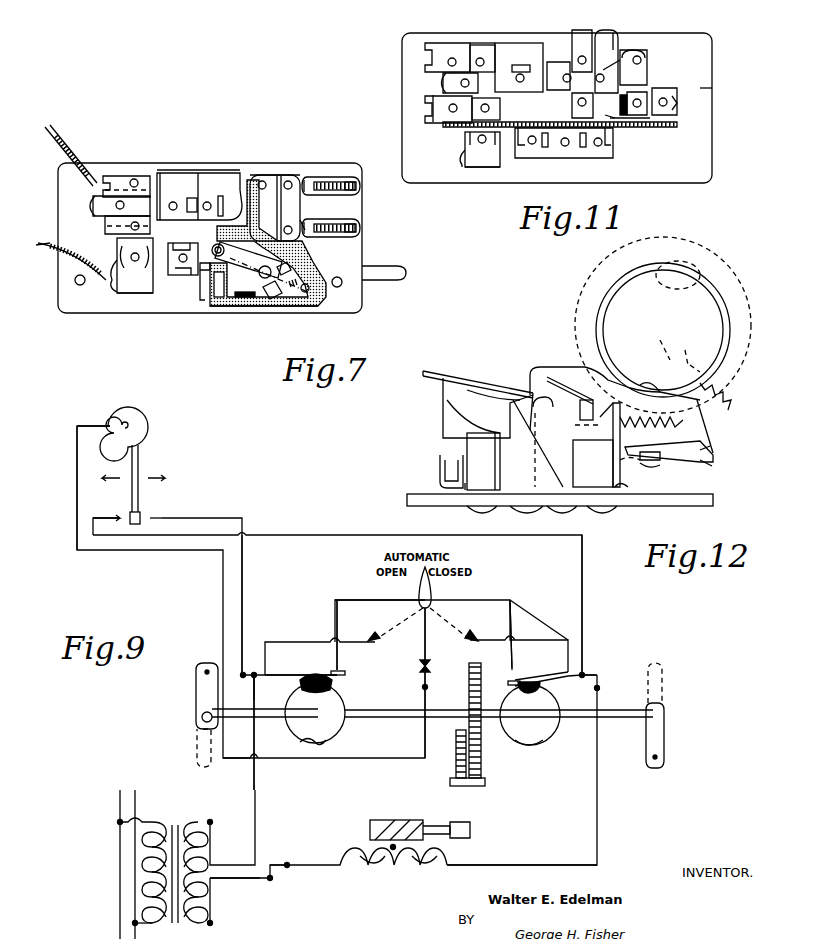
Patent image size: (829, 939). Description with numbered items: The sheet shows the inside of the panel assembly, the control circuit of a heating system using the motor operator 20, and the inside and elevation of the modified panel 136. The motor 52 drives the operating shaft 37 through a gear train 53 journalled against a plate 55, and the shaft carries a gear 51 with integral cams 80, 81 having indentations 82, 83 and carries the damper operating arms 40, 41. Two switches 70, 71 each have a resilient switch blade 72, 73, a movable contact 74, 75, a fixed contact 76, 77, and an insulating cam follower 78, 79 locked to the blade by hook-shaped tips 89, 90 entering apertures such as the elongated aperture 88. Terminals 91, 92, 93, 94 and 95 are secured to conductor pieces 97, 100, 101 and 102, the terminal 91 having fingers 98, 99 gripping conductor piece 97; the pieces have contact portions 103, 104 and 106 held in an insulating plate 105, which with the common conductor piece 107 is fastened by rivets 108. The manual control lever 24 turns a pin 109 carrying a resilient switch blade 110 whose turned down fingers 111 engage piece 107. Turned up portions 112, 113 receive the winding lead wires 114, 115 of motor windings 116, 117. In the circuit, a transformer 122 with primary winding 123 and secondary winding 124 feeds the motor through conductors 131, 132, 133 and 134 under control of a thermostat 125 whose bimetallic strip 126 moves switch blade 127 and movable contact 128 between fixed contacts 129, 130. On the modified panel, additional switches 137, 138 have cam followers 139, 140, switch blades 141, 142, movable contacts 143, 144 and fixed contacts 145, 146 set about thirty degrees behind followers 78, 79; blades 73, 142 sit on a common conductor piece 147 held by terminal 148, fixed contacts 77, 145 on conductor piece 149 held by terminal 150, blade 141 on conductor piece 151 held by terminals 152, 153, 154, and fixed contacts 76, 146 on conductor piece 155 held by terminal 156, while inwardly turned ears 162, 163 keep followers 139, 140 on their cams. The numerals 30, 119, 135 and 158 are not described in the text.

In FIG. 9, the motor operator 20 is at (536, 616).
In FIG. 7, the manual control lever 24 is at (392, 266).
In FIG. 9, the manual control lever 24 is at (432, 590).
In FIG. 12, the dial mechanism 30 is at (690, 366).
In FIG. 9, the operating shaft 37 is at (612, 718).
In FIG. 9, the operating arm 40 is at (658, 738).
In FIG. 9, the operating arm 41 is at (205, 693).
In FIG. 12, the gear 51 is at (732, 396).
In FIG. 9, the motor 52 is at (350, 831).
In FIG. 9, the gear train 53 is at (487, 795).
In FIG. 9, the plate 55 is at (482, 750).
In FIG. 7, the switch 70 is at (325, 250).
In FIG. 11, the switch 70 is at (648, 120).
In FIG. 12, the switch 70 is at (618, 457).
In FIG. 9, the switch 70 is at (526, 668).
In FIG. 7, the switch 71 is at (336, 169).
In FIG. 11, the switch 71 is at (661, 62).
In FIG. 9, the switch 71 is at (320, 665).
In FIG. 7, the resilient switch blade 72 is at (112, 228).
In FIG. 11, the resilient switch blade 72 is at (470, 130).
In FIG. 12, the resilient switch blade 72 is at (703, 442).
In FIG. 9, the resilient switch blade 72 is at (555, 682).
In FIG. 7, the resilient switch blade 73 is at (127, 176).
In FIG. 11, the resilient switch blade 73 is at (483, 44).
In FIG. 9, the resilient switch blade 73 is at (277, 674).
In FIG. 12, the movable contact 74 is at (662, 458).
In FIG. 9, the movable contact 74 is at (508, 682).
In FIG. 9, the movable contact 75 is at (344, 675).
In FIG. 7, the fixed contact 76 is at (308, 223).
In FIG. 11, the fixed contact 76 is at (646, 100).
In FIG. 12, the fixed contact 76 is at (658, 458).
In FIG. 9, the fixed contact 76 is at (511, 663).
In FIG. 7, the fixed contact 77 is at (289, 180).
In FIG. 11, the fixed contact 77 is at (660, 45).
In FIG. 9, the fixed contact 77 is at (342, 670).
In FIG. 7, the cam follower 78 is at (357, 230).
In FIG. 12, the cam follower 78 is at (700, 428).
In FIG. 9, the cam follower 78 is at (530, 715).
In FIG. 7, the cam follower 79 is at (357, 189).
In FIG. 9, the cam follower 79 is at (316, 690).
In FIG. 12, the cam 80 is at (740, 352).
In FIG. 9, the cam 80 is at (528, 742).
In FIG. 9, the cam 81 is at (336, 738).
In FIG. 12, the indentation 82 is at (648, 382).
In FIG. 9, the indentation 82 is at (302, 745).
In FIG. 12, the indentation 83 is at (678, 285).
In FIG. 9, the indentation 83 is at (518, 688).
In FIG. 7, the squared aperture 88 is at (330, 182).
In FIG. 12, the hook-shaped tip 89 is at (713, 457).
In FIG. 12, the hook-shaped tip 90 is at (710, 466).
In FIG. 11, the terminal 91 is at (482, 149).
In FIG. 12, the terminal 91 is at (468, 485).
In FIG. 9, the terminal 91 is at (585, 672).
In FIG. 7, the terminal 92 is at (182, 250).
In FIG. 9, the terminal 92 is at (428, 688).
In FIG. 9, the terminal 93 is at (272, 881).
In FIG. 7, the terminal 94 is at (172, 200).
In FIG. 9, the terminal 94 is at (250, 678).
In FIG. 7, the terminal 95 is at (210, 202).
In FIG. 9, the terminal 95 is at (245, 672).
In FIG. 7, the conductor piece 97 is at (158, 290).
In FIG. 11, the conductor piece 97 is at (478, 166).
In FIG. 12, the conductor piece 97 is at (450, 504).
In FIG. 9, the conductor piece 97 is at (594, 672).
In FIG. 7, the finger 98 is at (136, 265).
In FIG. 7, the finger 99 is at (130, 271).
In FIG. 7, the conductor piece 100 is at (186, 276).
In FIG. 9, the conductor piece 100 is at (420, 683).
In FIG. 7, the conductor piece 101 is at (112, 207).
In FIG. 11, the conductor piece 101 is at (440, 92).
In FIG. 9, the conductor piece 101 is at (285, 870).
In FIG. 7, the conductor piece 102 is at (185, 195).
In FIG. 9, the conductor piece 102 is at (256, 680).
In FIG. 7, the contact portion 103 is at (212, 283).
In FIG. 9, the contact portion 103 is at (470, 638).
In FIG. 7, the contact portion 104 is at (225, 192).
In FIG. 9, the contact portion 104 is at (374, 636).
In FIG. 7, the insulating plate 105 is at (340, 300).
In FIG. 7, the contact portion 106 is at (196, 270).
In FIG. 9, the contact portion 106 is at (420, 667).
In FIG. 7, the conductor piece 107 is at (292, 200).
In FIG. 9, the conductor piece 107 is at (335, 600).
In FIG. 7, the rivet 108 is at (263, 180).
In FIG. 7, the pin 109 is at (250, 300).
In FIG. 7, the resilient switch blade 110 is at (252, 266).
In FIG. 9, the resilient switch blade 110 is at (427, 646).
In FIG. 7, the turned down finger 111 is at (286, 280).
In FIG. 7, the turned up portion 112 is at (110, 290).
In FIG. 11, the turned up portion 112 is at (460, 160).
In FIG. 12, the turned up portion 112 is at (460, 452).
In FIG. 9, the turned up portion 112 is at (599, 688).
In FIG. 7, the turned up portion 113 is at (92, 190).
In FIG. 11, the turned up portion 113 is at (443, 83).
In FIG. 12, the turned up portion 113 is at (440, 472).
In FIG. 9, the turned up portion 113 is at (288, 862).
In FIG. 7, the winding lead wire 114 is at (40, 246).
In FIG. 9, the winding lead wire 114 is at (527, 851).
In FIG. 7, the winding lead wire 115 is at (48, 133).
In FIG. 9, the winding lead wire 115 is at (318, 862).
In FIG. 9, the motor winding 116 is at (424, 868).
In FIG. 9, the motor winding 117 is at (370, 868).
In FIG. 7, the cord 119 is at (52, 150).
In FIG. 9, the transformer 122 is at (173, 803).
In FIG. 9, the primary winding 123 is at (152, 828).
In FIG. 9, the secondary winding 124 is at (198, 828).
In FIG. 9, the thermostat 125 is at (207, 456).
In FIG. 9, the bimetallic strip 126 is at (150, 425).
In FIG. 9, the switch blade 127 is at (140, 462).
In FIG. 9, the movable contact 128 is at (142, 514).
In FIG. 9, the fixed contact 129 is at (146, 518).
In FIG. 9, the fixed contact 130 is at (114, 516).
In FIG. 9, the conductor 131 is at (247, 880).
In FIG. 9, the conductor 132 is at (583, 598).
In FIG. 9, the conductor 133 is at (77, 460).
In FIG. 9, the conductor 134 is at (255, 790).
In FIG. 9, the conductor 135 is at (244, 566).
In FIG. 11, the panel 136 is at (714, 86).
In FIG. 12, the panel 136 is at (713, 500).
In FIG. 11, the switch 137 is at (566, 108).
In FIG. 12, the switch 137 is at (540, 368).
In FIG. 11, the switch 138 is at (562, 46).
In FIG. 12, the switch 138 is at (528, 408).
In FIG. 12, the cam follower 139 is at (666, 430).
In FIG. 12, the cam follower 140 is at (635, 430).
In FIG. 11, the switch blade 141 is at (432, 108).
In FIG. 12, the switch blade 141 is at (514, 390).
In FIG. 11, the switch blade 142 is at (425, 62).
In FIG. 12, the switch blade 142 is at (490, 386).
In FIG. 12, the movable contact 143 is at (562, 395).
In FIG. 12, the movable contact 144 is at (580, 416).
In FIG. 11, the fixed contact 145 is at (592, 89).
In FIG. 12, the fixed contact 145 is at (575, 427).
In FIG. 11, the fixed contact 146 is at (590, 56).
In FIG. 11, the common conductor piece 147 is at (512, 55).
In FIG. 12, the common conductor piece 147 is at (462, 428).
In FIG. 11, the terminal 148 is at (515, 73).
In FIG. 11, the conductor piece 149 is at (672, 92).
In FIG. 11, the terminal 150 is at (678, 103).
In FIG. 11, the conductor piece 151 is at (527, 136).
In FIG. 12, the conductor piece 151 is at (455, 390).
In FIG. 11, the terminal 152 is at (540, 150).
In FIG. 12, the terminal 152 is at (520, 512).
In FIG. 11, the terminal 153 is at (590, 150).
In FIG. 12, the terminal 153 is at (573, 512).
In FIG. 11, the terminal 154 is at (604, 158).
In FIG. 12, the terminal 154 is at (612, 510).
In FIG. 11, the conductor piece 155 is at (615, 48).
In FIG. 12, the conductor piece 155 is at (628, 488).
In FIG. 11, the terminal 156 is at (560, 62).
In FIG. 11, the arm 158 is at (628, 50).
In FIG. 11, the inwardly turned ear 162 is at (617, 126).
In FIG. 12, the inwardly turned ear 162 is at (585, 443).
In FIG. 11, the inwardly turned ear 163 is at (602, 72).